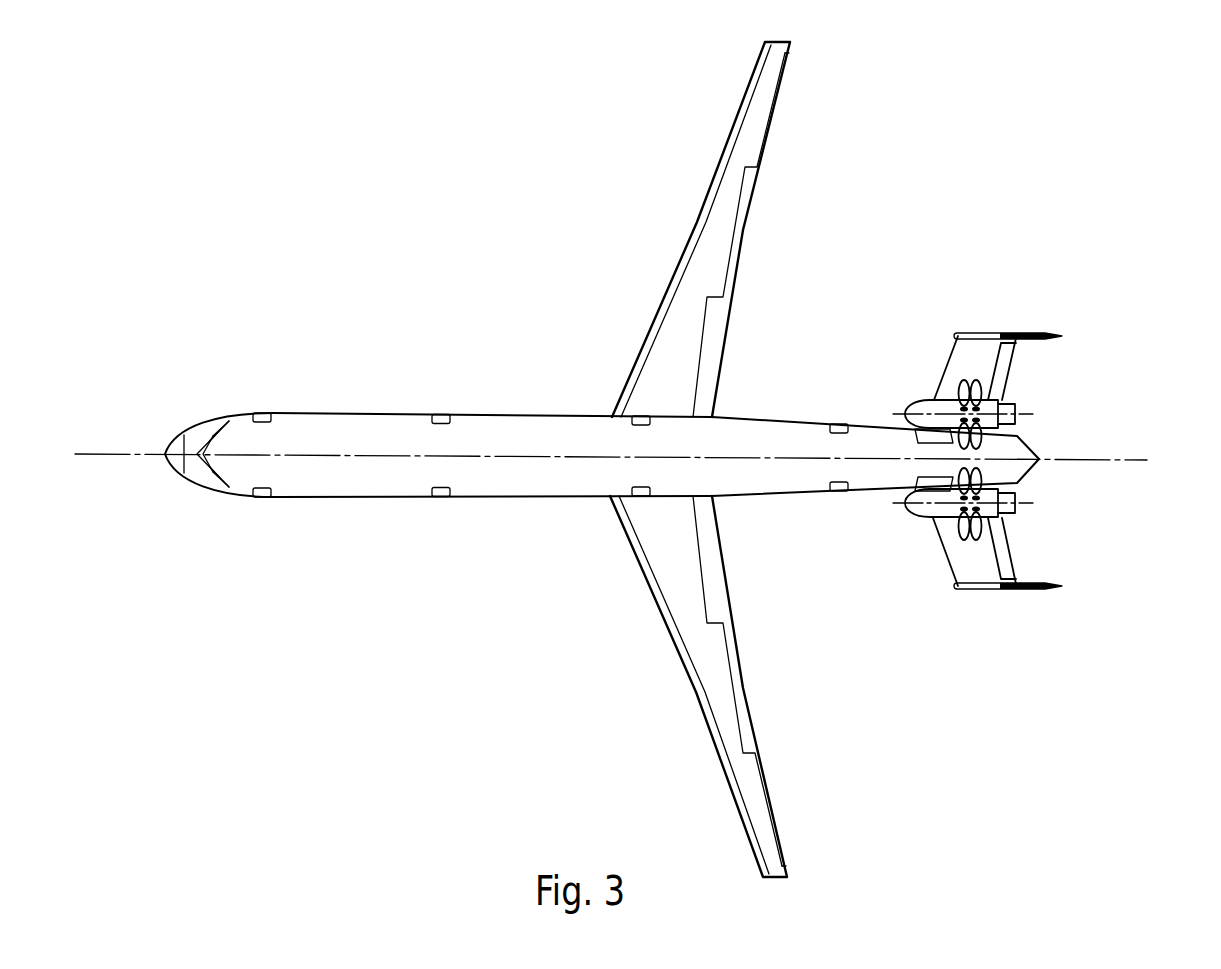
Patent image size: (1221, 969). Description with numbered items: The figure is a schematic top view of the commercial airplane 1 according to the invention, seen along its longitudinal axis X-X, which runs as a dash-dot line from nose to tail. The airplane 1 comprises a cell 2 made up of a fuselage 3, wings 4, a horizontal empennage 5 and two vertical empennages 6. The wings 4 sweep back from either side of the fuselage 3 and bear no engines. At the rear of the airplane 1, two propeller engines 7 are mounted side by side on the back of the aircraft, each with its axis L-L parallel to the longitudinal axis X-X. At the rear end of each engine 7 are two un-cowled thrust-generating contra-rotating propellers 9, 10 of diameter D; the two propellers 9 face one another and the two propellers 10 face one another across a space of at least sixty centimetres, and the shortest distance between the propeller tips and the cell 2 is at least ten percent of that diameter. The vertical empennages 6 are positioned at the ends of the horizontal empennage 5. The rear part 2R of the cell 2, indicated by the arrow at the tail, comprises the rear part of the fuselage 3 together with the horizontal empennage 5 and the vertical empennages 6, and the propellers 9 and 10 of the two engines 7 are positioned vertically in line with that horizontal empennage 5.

The commercial airplane 1 is at (455, 294).
The cell 2 is at (556, 392).
The rear part of the cell 2R is at (1060, 430).
The fuselage 3 is at (487, 472).
The wings 4 is at (710, 222).
The horizontal empennage 5 is at (980, 365).
The vertical empennages 6 is at (993, 333).
The propeller engines 7 is at (916, 400).
The contra-rotating propeller 9 is at (963, 382).
The contra-rotating propeller 10 is at (985, 466).